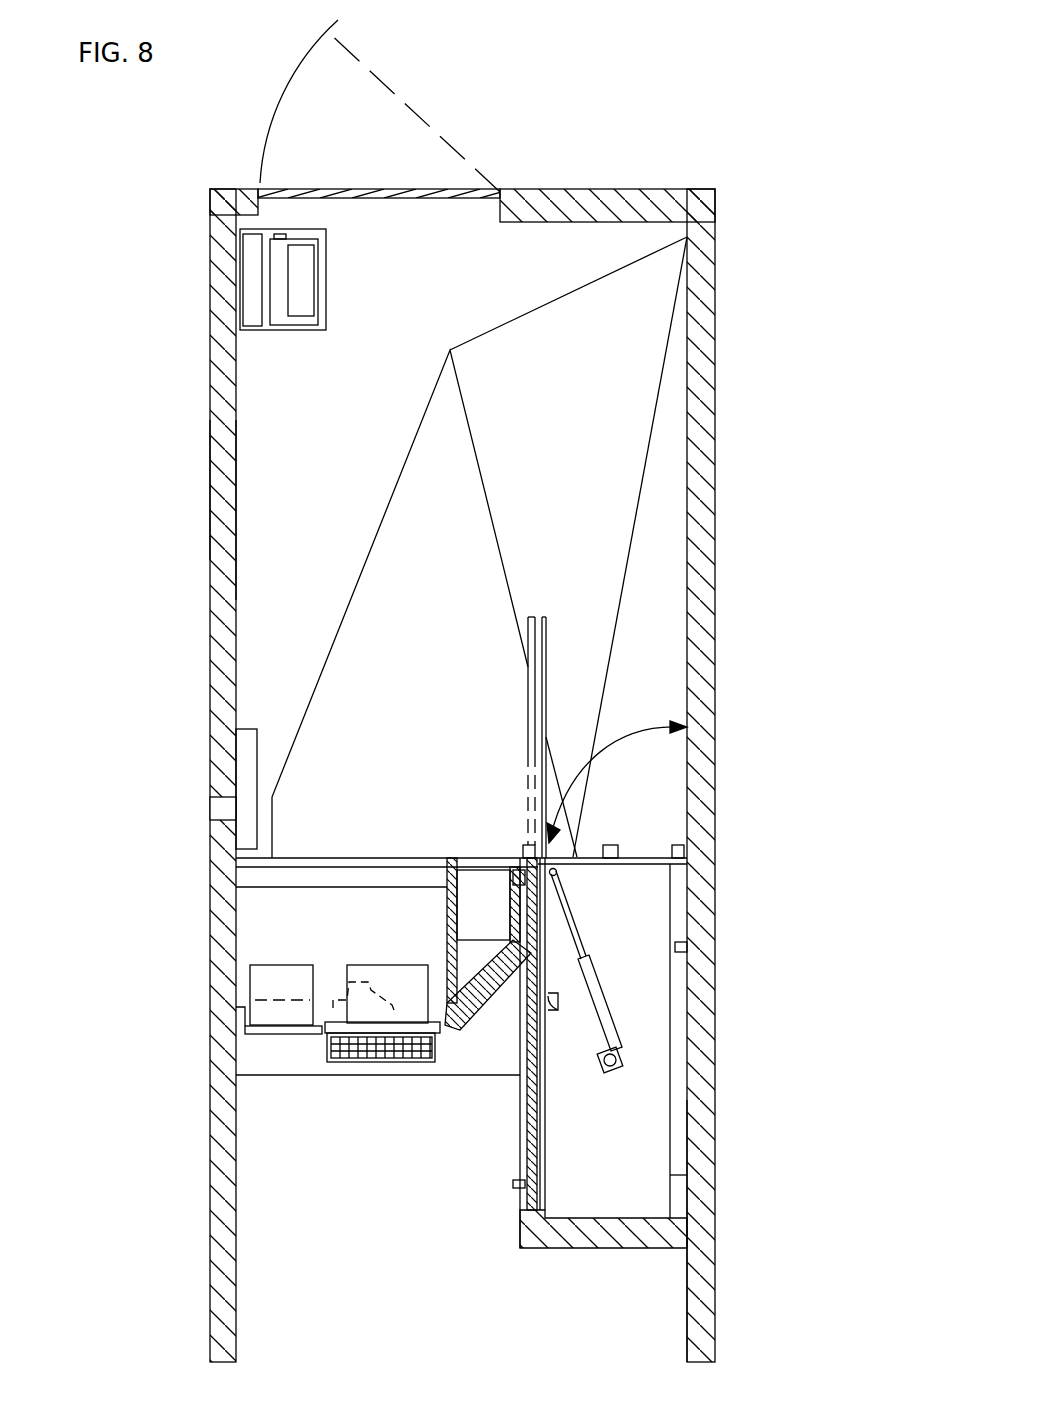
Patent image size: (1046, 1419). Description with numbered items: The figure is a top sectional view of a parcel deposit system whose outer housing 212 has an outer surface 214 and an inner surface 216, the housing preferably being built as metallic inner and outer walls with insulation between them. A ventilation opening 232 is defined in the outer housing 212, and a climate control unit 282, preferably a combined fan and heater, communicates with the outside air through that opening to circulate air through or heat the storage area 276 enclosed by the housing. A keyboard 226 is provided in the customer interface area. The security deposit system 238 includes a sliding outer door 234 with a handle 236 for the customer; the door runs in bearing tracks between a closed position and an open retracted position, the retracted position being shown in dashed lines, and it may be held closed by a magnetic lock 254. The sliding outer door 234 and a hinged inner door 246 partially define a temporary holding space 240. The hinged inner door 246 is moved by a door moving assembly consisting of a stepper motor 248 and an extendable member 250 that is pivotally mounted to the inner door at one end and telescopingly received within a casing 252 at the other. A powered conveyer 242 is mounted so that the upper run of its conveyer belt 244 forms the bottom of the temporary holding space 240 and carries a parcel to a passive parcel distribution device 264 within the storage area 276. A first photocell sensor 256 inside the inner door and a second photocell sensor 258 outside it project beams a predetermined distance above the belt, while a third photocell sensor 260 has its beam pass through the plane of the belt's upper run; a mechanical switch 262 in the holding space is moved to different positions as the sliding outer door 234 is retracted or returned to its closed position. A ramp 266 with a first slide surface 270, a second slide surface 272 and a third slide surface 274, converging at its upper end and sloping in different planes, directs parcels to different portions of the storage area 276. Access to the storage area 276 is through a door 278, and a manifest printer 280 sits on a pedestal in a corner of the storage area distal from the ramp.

The outer housing 212 is at (200, 418).
The outer surface 214 is at (235, 499).
The inner surface 216 is at (237, 528).
The keyboard 226 is at (348, 1063).
The ventilation opening 232 is at (208, 818).
The sliding outer door 234 is at (533, 1148).
The handle 236 is at (513, 1188).
The security deposit system 238 is at (508, 1095).
The temporary holding space 240 is at (652, 1106).
The powered conveyer 242 is at (682, 1148).
The conveyer belt 244 is at (663, 1028).
The hinged inner door 246 is at (613, 846).
The stepper motor 248 is at (627, 1065).
The extendable member 250 is at (580, 938).
The casing 252 is at (605, 1003).
The magnetic lock 254 is at (524, 848).
The first photocell sensor 256 is at (685, 947).
The second photocell sensor 258 is at (673, 846).
The third photocell sensor 260 is at (690, 727).
The mechanical switch 262 is at (526, 1042).
The passive parcel distribution device 264 is at (660, 522).
The ramp 266 is at (622, 464).
The first slide surface 270 is at (672, 405).
The second slide surface 272 is at (568, 445).
The third slide surface 274 is at (453, 527).
The storage area 276 is at (497, 262).
The door 278 is at (323, 190).
The manifest printer 280 is at (327, 275).
The climate control unit 282 is at (245, 735).